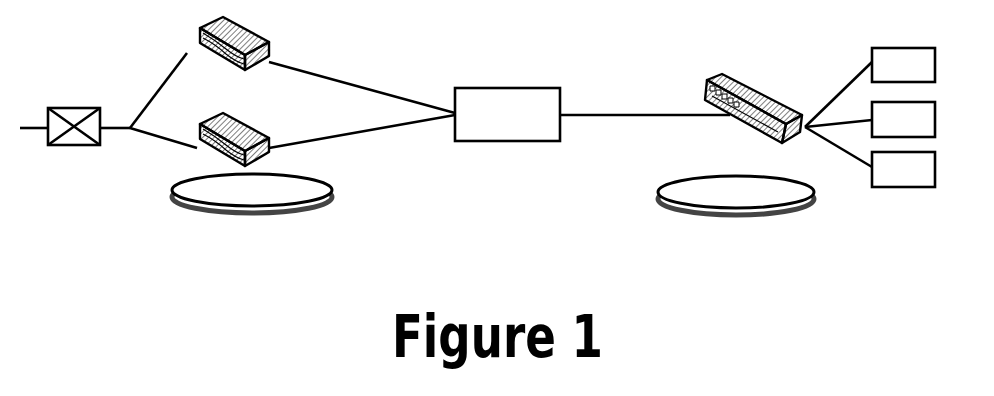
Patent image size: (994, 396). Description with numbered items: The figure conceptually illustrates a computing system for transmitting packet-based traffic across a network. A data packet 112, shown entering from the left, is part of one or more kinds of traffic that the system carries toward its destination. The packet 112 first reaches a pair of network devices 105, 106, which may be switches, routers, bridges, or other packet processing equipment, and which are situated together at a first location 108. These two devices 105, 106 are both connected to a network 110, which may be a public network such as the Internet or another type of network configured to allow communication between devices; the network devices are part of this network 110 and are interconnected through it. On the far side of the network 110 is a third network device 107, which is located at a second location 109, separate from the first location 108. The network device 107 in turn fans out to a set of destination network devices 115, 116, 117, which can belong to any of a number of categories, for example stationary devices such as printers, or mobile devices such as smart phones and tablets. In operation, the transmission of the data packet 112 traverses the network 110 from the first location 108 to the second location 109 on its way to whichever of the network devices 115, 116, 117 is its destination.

The network device 105 is at (252, 30).
The network device 106 is at (258, 128).
The network device 107 is at (722, 74).
The first location 108 is at (270, 203).
The second location 109 is at (754, 205).
The network 110 is at (523, 127).
The data packet 112 is at (74, 108).
The network device 115 is at (919, 75).
The network device 116 is at (919, 130).
The network device 117 is at (919, 180).